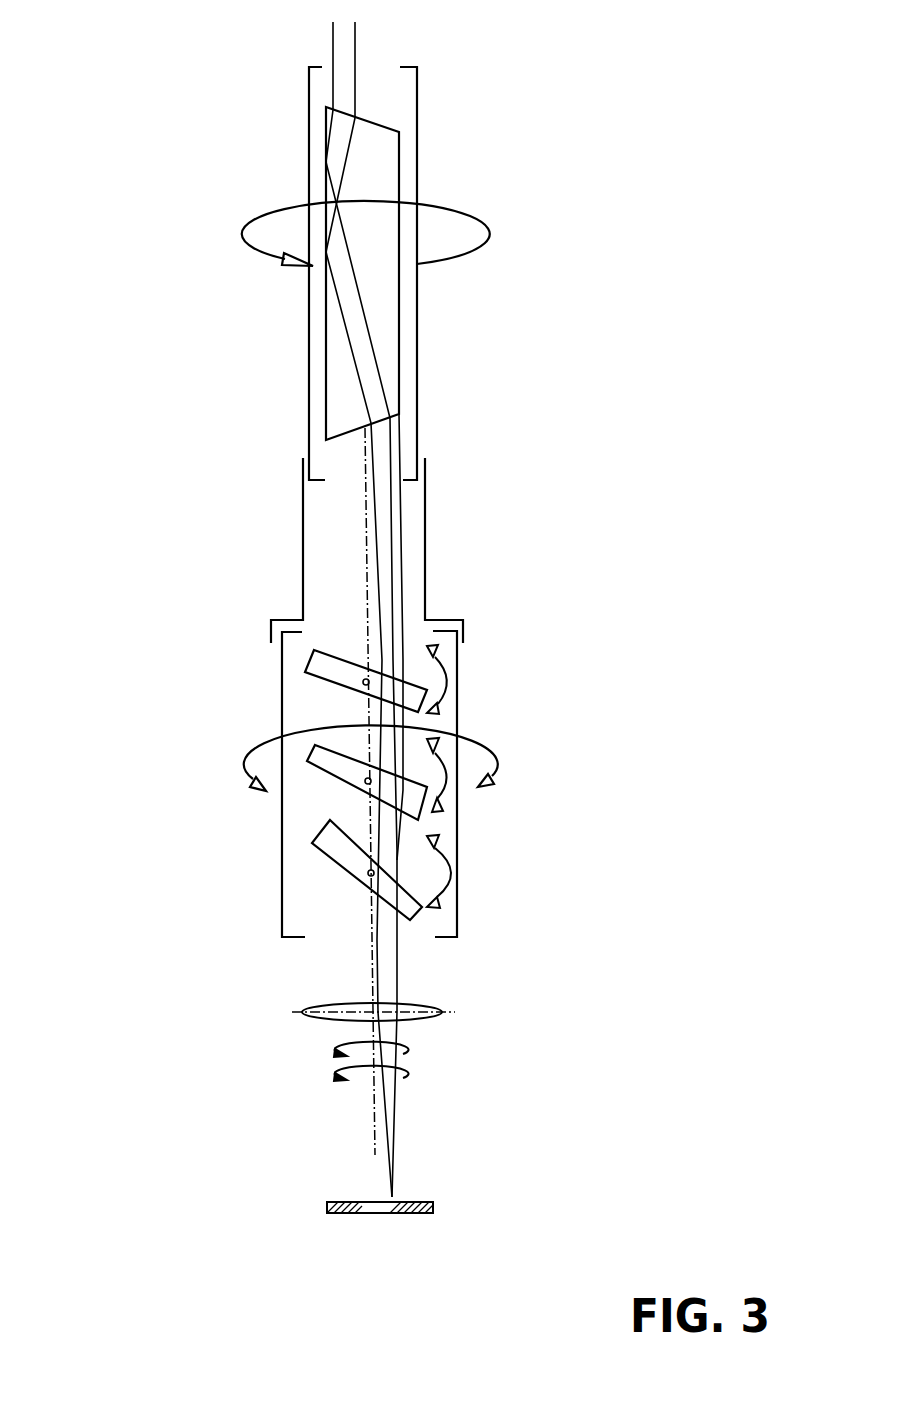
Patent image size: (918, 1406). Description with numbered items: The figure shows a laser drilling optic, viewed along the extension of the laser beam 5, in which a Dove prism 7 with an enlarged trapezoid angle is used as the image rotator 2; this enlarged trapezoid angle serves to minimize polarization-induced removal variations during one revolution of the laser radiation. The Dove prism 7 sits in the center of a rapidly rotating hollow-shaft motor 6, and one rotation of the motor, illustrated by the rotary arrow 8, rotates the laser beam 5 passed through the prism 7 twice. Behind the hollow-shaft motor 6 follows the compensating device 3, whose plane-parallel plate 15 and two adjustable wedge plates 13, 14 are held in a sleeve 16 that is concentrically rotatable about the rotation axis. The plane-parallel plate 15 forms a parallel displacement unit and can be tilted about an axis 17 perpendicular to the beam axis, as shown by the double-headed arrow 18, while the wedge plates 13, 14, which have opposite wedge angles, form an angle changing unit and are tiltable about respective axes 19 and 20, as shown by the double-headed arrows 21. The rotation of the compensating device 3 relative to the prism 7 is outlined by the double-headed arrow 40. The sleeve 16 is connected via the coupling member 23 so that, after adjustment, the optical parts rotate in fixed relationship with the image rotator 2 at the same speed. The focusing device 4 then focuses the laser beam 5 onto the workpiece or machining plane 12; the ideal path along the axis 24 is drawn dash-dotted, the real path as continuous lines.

The image rotator 2 is at (262, 321).
The compensating device 3 is at (176, 782).
The focusing device 4 is at (420, 1018).
The laser beam 5 is at (355, 33).
The hollow-shaft motor 6 is at (412, 143).
The Dove prism 7 is at (388, 313).
The rotary arrow 8 is at (268, 213).
The machining plane 12 is at (400, 1202).
The first wedge plate 13 is at (338, 768).
The second wedge plate 14 is at (327, 845).
The plane-parallel plate 15 is at (317, 665).
The sleeve 16 is at (460, 907).
The tilt axis of plane-parallel plate 17 is at (363, 682).
The double-headed arrow 18 is at (448, 678).
The tilt axis of first wedge plate 19 is at (365, 783).
The tilt axis of second wedge plate 20 is at (368, 873).
The double-headed arrows 21 is at (445, 792).
The coupling member 23 is at (425, 543).
The axis of the arrangement 24 is at (372, 952).
The double-headed arrow 40 is at (255, 752).